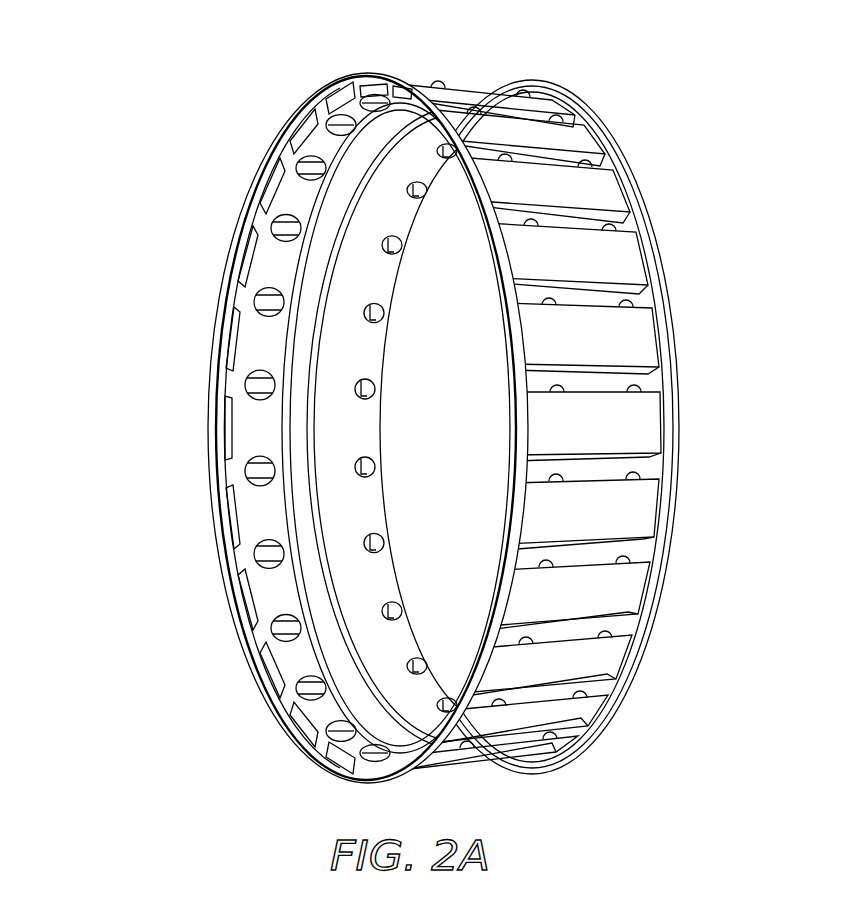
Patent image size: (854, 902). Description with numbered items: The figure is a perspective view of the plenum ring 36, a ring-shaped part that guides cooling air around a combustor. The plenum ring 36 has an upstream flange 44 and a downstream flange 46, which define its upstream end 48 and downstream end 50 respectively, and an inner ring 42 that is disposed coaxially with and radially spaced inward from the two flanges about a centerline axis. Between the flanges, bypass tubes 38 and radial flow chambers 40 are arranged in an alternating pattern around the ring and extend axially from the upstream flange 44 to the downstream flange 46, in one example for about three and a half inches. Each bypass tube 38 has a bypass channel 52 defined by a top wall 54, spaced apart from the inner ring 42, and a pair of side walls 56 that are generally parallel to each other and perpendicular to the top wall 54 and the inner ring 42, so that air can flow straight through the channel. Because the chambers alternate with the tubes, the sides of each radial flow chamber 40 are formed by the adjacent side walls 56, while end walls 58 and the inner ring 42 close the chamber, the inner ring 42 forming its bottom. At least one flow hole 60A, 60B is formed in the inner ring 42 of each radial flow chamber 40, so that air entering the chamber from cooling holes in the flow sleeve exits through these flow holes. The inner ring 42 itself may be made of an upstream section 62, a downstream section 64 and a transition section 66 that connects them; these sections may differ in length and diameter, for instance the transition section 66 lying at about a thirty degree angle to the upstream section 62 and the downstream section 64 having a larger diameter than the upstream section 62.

The plenum ring 36 is at (150, 485).
The bypass tube 38 is at (627, 510).
The radial flow chamber 40 is at (597, 548).
The inner ring 42 is at (351, 362).
The upstream flange 44 is at (676, 339).
The downstream flange 46 is at (505, 309).
The upstream end 48 is at (680, 385).
The downstream end 50 is at (517, 355).
The bypass channel 52 is at (341, 90).
The top wall 54 is at (628, 492).
The side wall 56 is at (332, 100).
The end wall 58 is at (345, 100).
The flow hole 60A is at (398, 244).
The flow hole 60B is at (268, 225).
The upstream section 62 is at (348, 435).
The downstream section 64 is at (262, 328).
The transition section 66 is at (306, 290).